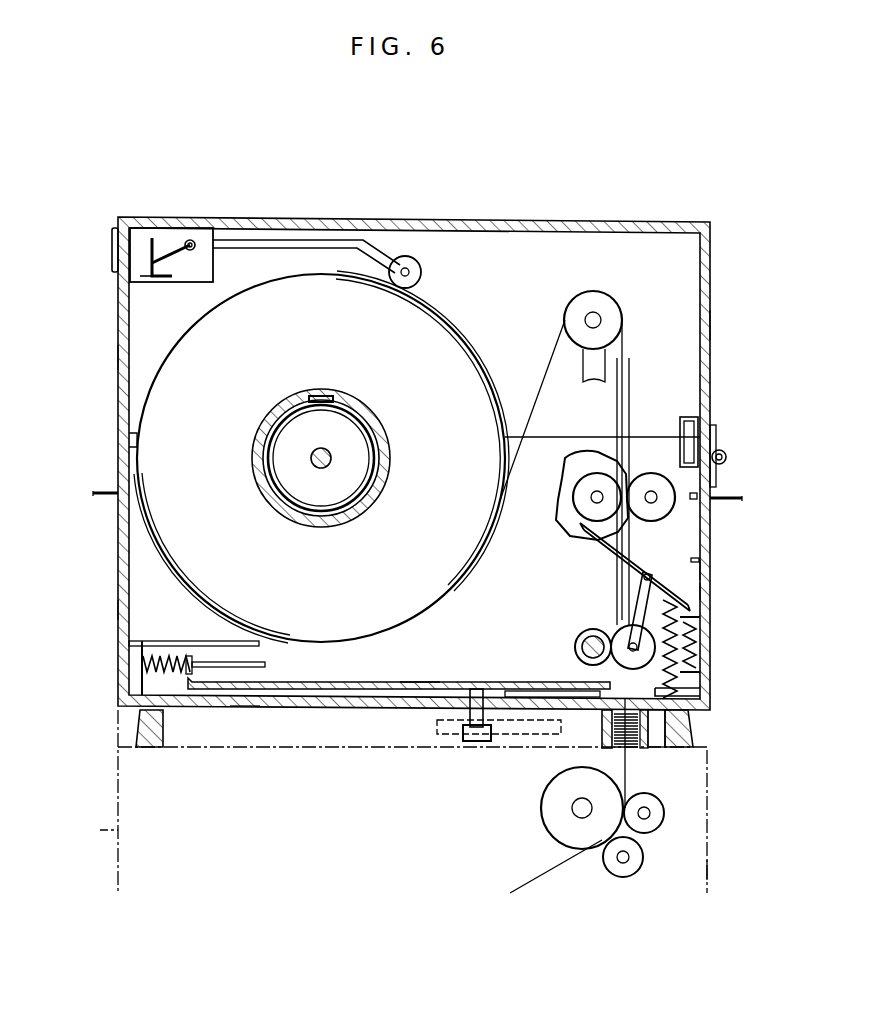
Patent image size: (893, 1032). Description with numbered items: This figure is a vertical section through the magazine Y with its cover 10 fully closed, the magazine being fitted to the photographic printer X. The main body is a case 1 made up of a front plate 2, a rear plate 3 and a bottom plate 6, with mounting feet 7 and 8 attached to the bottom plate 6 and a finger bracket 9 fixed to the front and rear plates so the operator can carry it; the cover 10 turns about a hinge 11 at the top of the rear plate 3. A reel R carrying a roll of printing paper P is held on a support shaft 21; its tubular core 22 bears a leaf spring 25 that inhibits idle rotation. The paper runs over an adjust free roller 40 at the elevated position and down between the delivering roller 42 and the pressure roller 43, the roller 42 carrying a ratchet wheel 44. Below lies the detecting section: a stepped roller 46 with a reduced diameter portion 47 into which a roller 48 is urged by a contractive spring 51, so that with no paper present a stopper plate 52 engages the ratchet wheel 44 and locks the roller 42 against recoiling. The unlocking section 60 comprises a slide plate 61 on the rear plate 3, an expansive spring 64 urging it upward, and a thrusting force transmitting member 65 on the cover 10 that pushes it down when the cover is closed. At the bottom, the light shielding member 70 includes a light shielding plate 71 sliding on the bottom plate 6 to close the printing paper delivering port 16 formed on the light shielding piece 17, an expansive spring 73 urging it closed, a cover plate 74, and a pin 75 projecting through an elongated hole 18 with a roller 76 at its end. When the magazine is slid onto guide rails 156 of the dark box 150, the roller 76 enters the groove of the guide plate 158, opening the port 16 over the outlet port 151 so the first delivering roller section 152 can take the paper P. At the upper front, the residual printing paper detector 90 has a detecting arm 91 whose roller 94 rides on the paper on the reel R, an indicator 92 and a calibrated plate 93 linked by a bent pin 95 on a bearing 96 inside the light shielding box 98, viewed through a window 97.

The case 1 is at (116, 566).
The front plate 2 is at (116, 608).
The rear plate 3 is at (700, 628).
The bottom plate 6 is at (236, 699).
The mounting foot 7 is at (160, 748).
The mounting foot 8 is at (705, 712).
The finger bracket 9 is at (96, 492).
The cover 10 is at (114, 356).
The hinge 11 is at (723, 452).
The printing paper delivering port 16 is at (695, 737).
The light shielding piece 17 is at (602, 730).
The elongated hole 18 is at (512, 691).
The support shaft 21 is at (332, 458).
The tubular core 22 is at (340, 402).
The leaf spring 25 is at (318, 395).
The adjust free roller 40 is at (600, 293).
The roller 42 is at (596, 473).
The roller 43 is at (651, 473).
The ratchet wheel 44 is at (565, 500).
The stepped roller 46 is at (576, 640).
The reduced diameter portion 47 is at (585, 655).
The roller 48 is at (622, 630).
The contractive spring 51 is at (700, 690).
The stopper plate 52 is at (600, 542).
The unlocking section 60 is at (702, 560).
The slide plate 61 is at (702, 583).
The expansive spring 64 is at (680, 642).
The thrusting force transmitting member 65 is at (684, 417).
The light shielding member 70 is at (422, 682).
The light shielding plate 71 is at (300, 690).
The expansive spring 73 is at (185, 658).
The cover plate 74 is at (158, 641).
The pin 75 is at (476, 689).
The roller 76 is at (478, 741).
The residual printing paper detector 90 is at (284, 225).
The detecting arm 91 is at (243, 240).
The indicator 92 is at (185, 243).
The calibrated plate 93 is at (153, 238).
The roller 94 is at (408, 258).
The bent pin 95 is at (190, 252).
The bearing 96 is at (214, 262).
The window 97 is at (112, 255).
The light shielding box 98 is at (156, 278).
The delivering and cutting dark box 150 is at (83, 831).
The outlet port 151 is at (640, 748).
The first printing paper delivering roller section 152 is at (598, 863).
The guide rails 156 is at (117, 742).
The guide plate 158 is at (440, 733).
The printing paper P is at (445, 345).
The reel R is at (372, 482).
The photographic printer X is at (710, 868).
The magazine Y is at (712, 323).